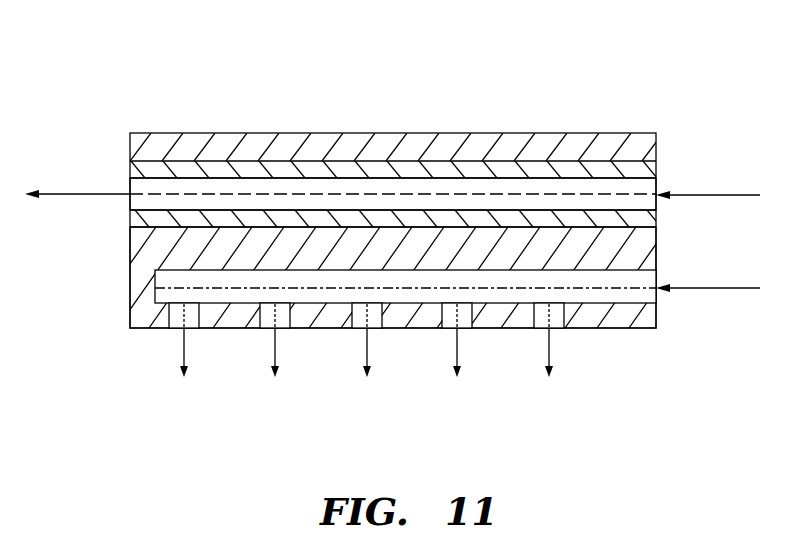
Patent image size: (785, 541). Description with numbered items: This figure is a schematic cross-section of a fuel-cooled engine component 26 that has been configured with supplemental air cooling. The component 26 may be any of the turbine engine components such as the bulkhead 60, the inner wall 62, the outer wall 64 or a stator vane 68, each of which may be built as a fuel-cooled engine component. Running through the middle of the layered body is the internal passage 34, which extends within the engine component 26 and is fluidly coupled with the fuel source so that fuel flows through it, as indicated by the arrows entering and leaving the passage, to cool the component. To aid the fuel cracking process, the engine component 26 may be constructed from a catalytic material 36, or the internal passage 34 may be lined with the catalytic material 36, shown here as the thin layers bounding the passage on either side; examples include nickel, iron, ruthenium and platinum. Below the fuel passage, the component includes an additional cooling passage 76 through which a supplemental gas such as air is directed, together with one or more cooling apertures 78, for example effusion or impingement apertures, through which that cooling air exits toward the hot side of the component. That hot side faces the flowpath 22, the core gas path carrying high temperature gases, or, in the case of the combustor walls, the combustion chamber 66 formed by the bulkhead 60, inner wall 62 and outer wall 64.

The fuel-cooled engine component 26 is at (412, 173).
The bulkhead 60 is at (412, 173).
The inner wall 62 is at (412, 173).
The outer wall 64 is at (412, 173).
The stator vane 68 is at (625, 50).
The catalytic material 36 is at (638, 167).
The internal passage 34 is at (640, 185).
The flowpath 22 is at (408, 335).
The combustion chamber 66 is at (443, 443).
The cooling passage 76 is at (613, 295).
The cooling apertures 78 is at (192, 317).